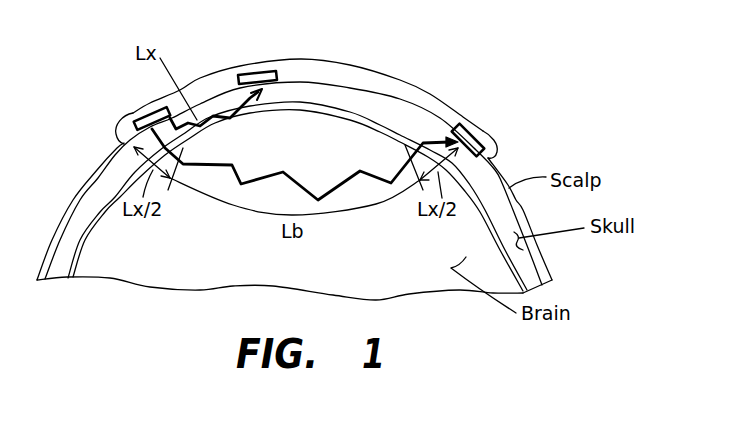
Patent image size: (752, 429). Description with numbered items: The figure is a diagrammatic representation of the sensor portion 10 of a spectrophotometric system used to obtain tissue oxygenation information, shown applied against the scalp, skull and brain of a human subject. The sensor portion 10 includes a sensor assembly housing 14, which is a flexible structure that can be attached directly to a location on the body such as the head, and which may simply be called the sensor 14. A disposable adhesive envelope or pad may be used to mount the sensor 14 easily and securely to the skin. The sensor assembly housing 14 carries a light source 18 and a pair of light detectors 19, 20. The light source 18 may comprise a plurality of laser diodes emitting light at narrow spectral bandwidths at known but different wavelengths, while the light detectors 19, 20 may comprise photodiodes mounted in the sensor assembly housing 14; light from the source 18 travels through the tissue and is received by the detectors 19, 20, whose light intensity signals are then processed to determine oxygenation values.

The sensor portion 10 is at (340, 150).
The sensor assembly housing 14 is at (378, 70).
The light source 18 is at (143, 115).
The light detector 19 is at (252, 72).
The light detector 20 is at (467, 129).